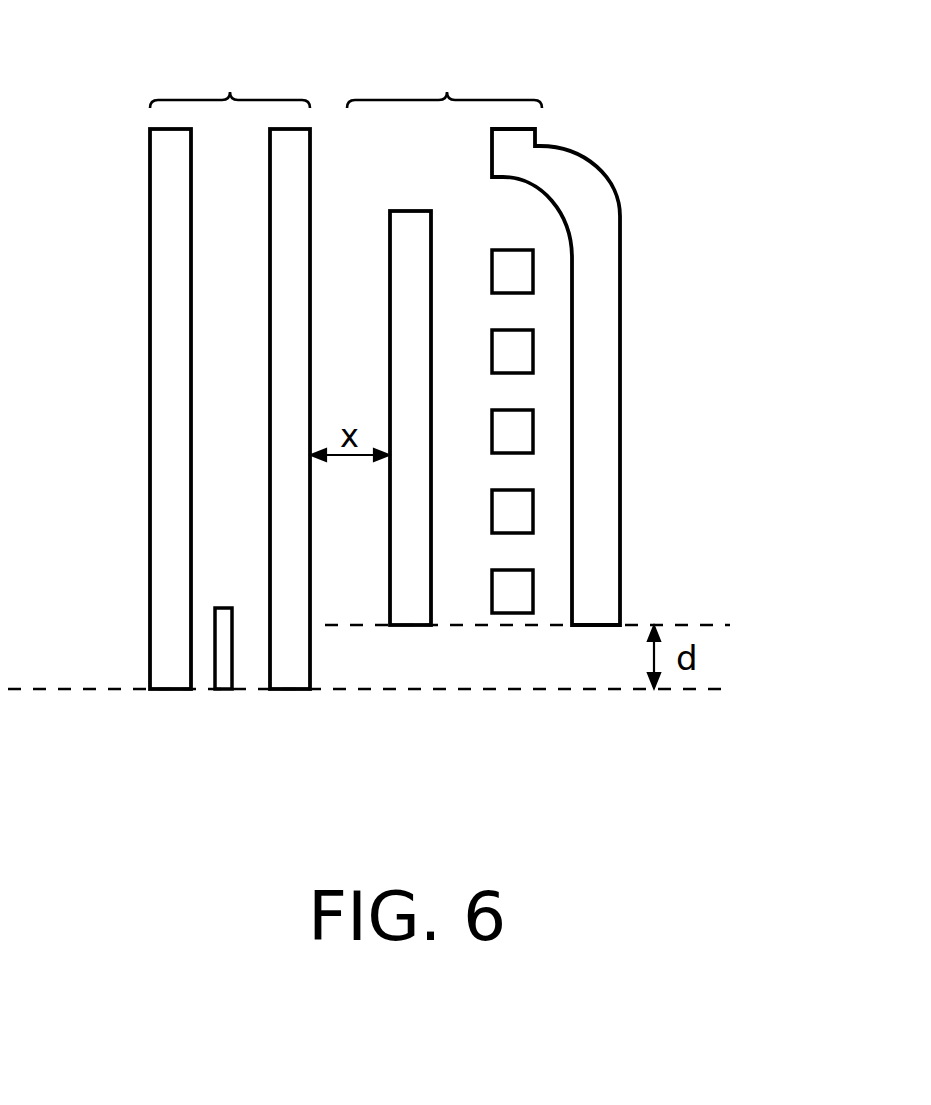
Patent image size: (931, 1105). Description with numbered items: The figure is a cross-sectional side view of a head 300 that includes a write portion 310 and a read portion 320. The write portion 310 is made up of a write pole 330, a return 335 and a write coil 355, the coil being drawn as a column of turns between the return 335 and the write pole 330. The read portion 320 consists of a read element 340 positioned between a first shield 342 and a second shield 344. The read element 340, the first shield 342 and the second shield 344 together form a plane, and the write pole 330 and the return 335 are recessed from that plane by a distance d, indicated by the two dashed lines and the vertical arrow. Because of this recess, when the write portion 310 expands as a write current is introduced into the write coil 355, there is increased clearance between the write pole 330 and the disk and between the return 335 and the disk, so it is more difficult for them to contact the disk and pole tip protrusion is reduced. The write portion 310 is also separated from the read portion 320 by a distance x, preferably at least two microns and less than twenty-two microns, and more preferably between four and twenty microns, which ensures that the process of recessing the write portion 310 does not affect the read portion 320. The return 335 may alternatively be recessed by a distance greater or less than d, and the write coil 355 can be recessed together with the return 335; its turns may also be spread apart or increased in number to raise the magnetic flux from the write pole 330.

The head 300 is at (603, 65).
The write portion 310 is at (444, 77).
The read portion 320 is at (230, 77).
The write pole 330 is at (603, 515).
The return 335 is at (405, 223).
The read element 340 is at (217, 608).
The first shield 342 is at (270, 208).
The second shield 344 is at (148, 290).
The write coil 355 is at (524, 250).